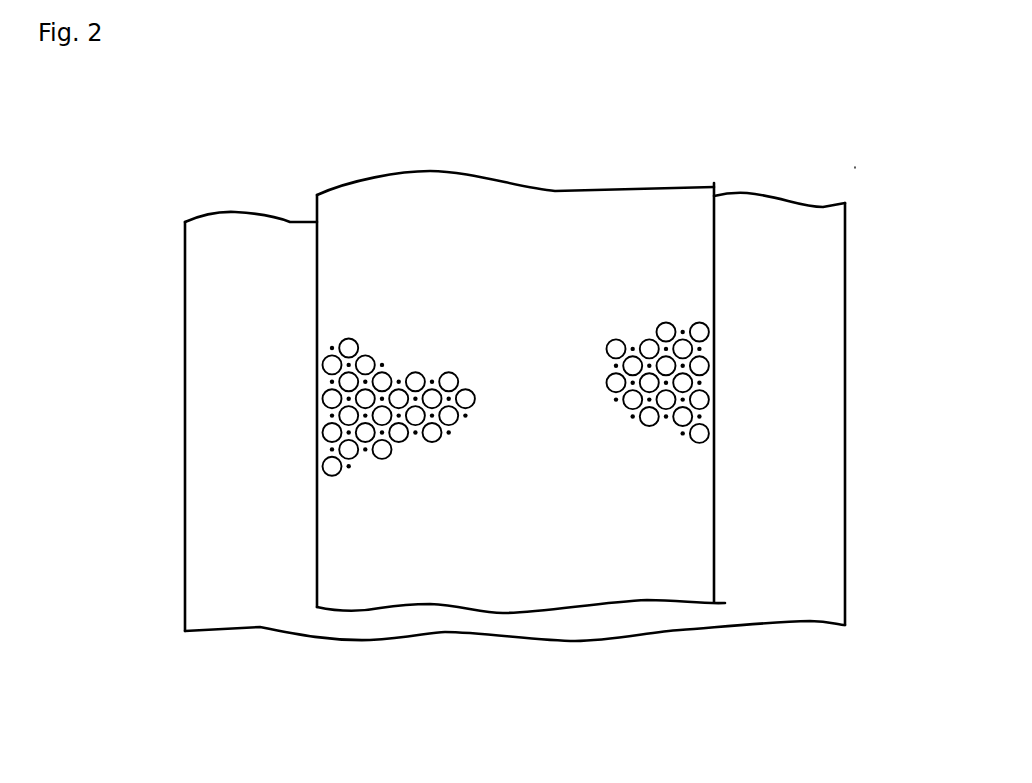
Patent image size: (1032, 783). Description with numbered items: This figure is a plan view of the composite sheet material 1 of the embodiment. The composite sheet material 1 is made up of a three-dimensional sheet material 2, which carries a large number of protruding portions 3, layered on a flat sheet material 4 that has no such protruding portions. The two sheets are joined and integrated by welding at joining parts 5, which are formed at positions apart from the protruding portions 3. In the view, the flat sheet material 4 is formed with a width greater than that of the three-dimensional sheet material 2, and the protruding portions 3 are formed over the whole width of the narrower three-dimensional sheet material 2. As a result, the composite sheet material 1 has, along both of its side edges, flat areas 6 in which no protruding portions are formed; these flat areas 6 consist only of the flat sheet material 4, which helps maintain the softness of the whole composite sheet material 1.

The composite sheet material 1 is at (855, 167).
The three-dimensional sheet material 2 is at (587, 235).
The protruding portions 3 is at (709, 332).
The flat sheet material 4 is at (445, 633).
The joining parts 5 is at (703, 384).
The flat areas 6 is at (212, 314).